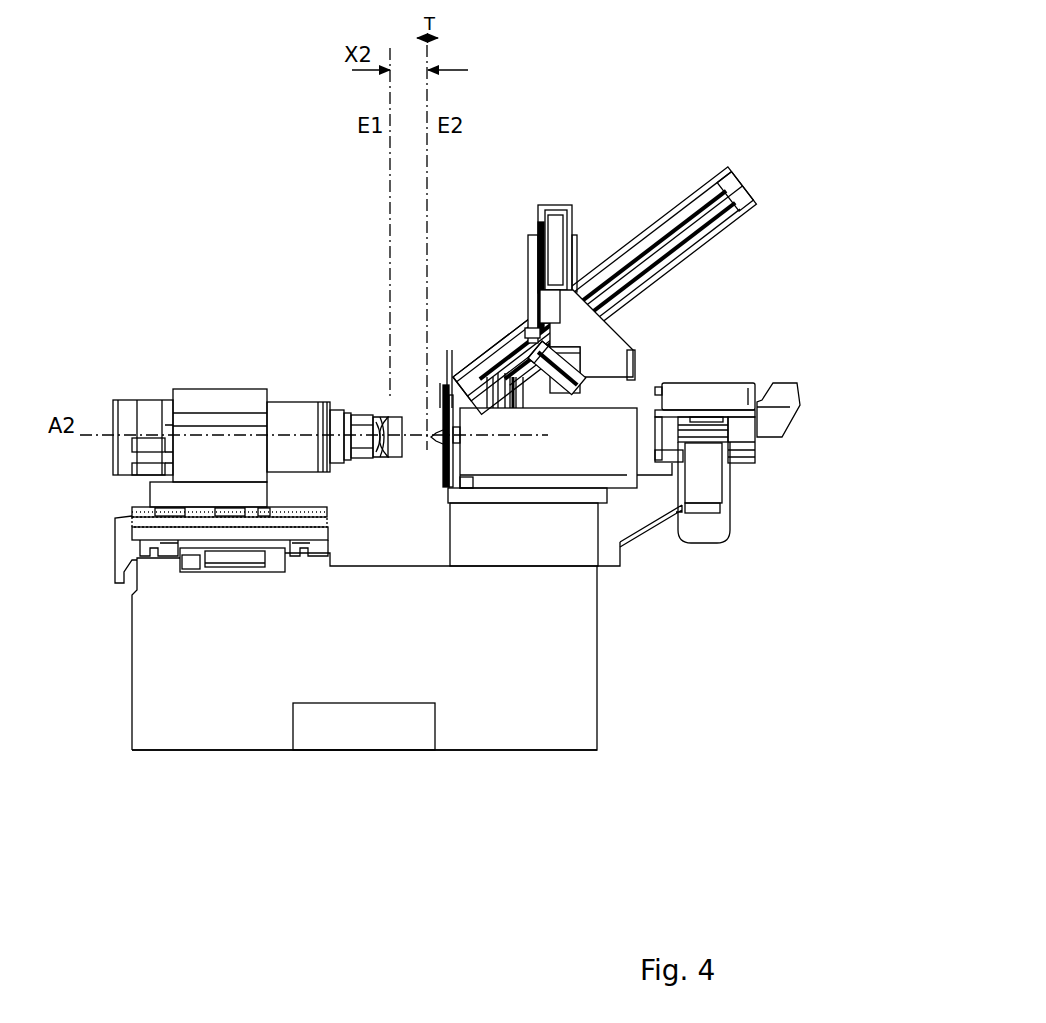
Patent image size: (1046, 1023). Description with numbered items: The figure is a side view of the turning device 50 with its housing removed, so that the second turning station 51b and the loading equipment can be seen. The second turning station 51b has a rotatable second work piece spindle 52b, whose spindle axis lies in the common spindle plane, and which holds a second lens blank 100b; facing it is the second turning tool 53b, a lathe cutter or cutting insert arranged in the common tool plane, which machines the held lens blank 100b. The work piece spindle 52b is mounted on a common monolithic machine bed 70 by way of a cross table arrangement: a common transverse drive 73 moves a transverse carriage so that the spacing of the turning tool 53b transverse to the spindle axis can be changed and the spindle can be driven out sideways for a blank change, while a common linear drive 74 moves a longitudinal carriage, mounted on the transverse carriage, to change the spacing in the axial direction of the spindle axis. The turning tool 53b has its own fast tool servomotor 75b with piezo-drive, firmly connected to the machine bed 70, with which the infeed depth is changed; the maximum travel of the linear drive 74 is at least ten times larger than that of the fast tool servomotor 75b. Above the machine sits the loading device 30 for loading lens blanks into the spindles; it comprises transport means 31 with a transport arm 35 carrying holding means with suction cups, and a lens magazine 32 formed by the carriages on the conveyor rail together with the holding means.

The loading device 30 is at (758, 388).
The transport means 31 is at (738, 420).
The lens magazine 32 is at (723, 395).
The transport arm 35 is at (653, 215).
The turning device 50 is at (463, 757).
The second turning station 51b is at (217, 387).
The second work piece spindle 52b is at (363, 413).
The second turning tool 53b is at (429, 441).
The machine bed 70 is at (522, 733).
The transverse drive 73 is at (273, 563).
The linear drive 74 is at (178, 524).
The fast tool servomotor 75b is at (523, 425).
The second lens blank 100b is at (387, 413).